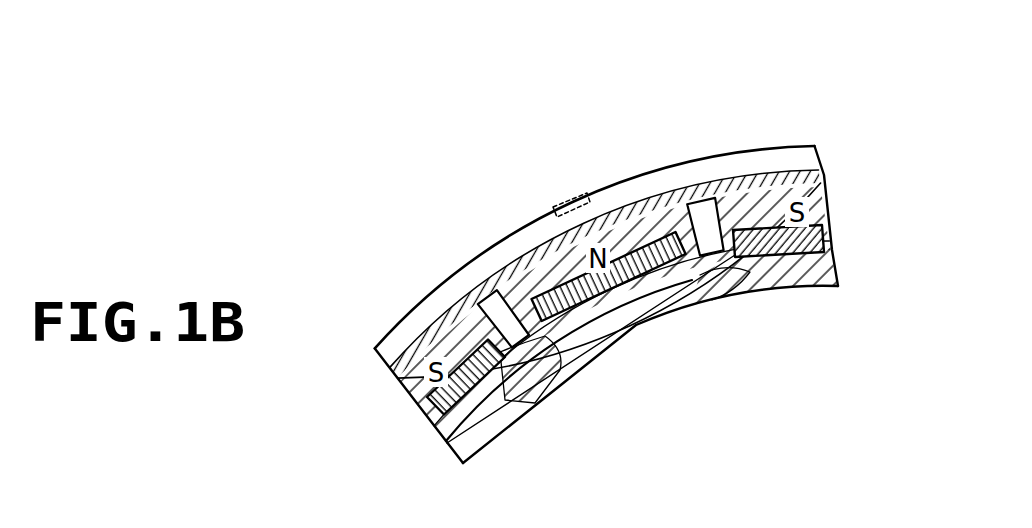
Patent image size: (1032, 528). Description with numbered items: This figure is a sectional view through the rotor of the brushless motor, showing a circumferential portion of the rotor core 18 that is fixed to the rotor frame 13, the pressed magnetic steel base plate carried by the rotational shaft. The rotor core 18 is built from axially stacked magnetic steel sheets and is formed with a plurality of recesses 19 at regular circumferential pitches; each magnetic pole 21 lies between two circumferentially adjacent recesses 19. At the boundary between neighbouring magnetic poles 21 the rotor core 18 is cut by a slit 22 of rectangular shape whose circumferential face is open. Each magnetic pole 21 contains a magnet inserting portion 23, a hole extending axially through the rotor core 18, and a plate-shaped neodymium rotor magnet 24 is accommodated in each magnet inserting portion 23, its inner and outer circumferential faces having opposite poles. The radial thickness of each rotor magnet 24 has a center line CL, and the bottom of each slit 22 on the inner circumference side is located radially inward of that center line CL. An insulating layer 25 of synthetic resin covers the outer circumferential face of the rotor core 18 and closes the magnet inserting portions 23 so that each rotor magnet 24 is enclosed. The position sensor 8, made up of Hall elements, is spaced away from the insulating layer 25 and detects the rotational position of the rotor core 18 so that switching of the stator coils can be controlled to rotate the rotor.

The position sensor 8 is at (571, 196).
The rotor frame 13 is at (372, 345).
The rotor core 18 is at (822, 198).
The recesses 19 is at (742, 292).
The magnetic poles 21 is at (823, 285).
The slits 22 is at (503, 296).
The magnet inserting portion 23 is at (630, 256).
The rotor magnet 24 is at (772, 195).
The insulating layer 25 is at (810, 152).
The center line CL is at (603, 343).